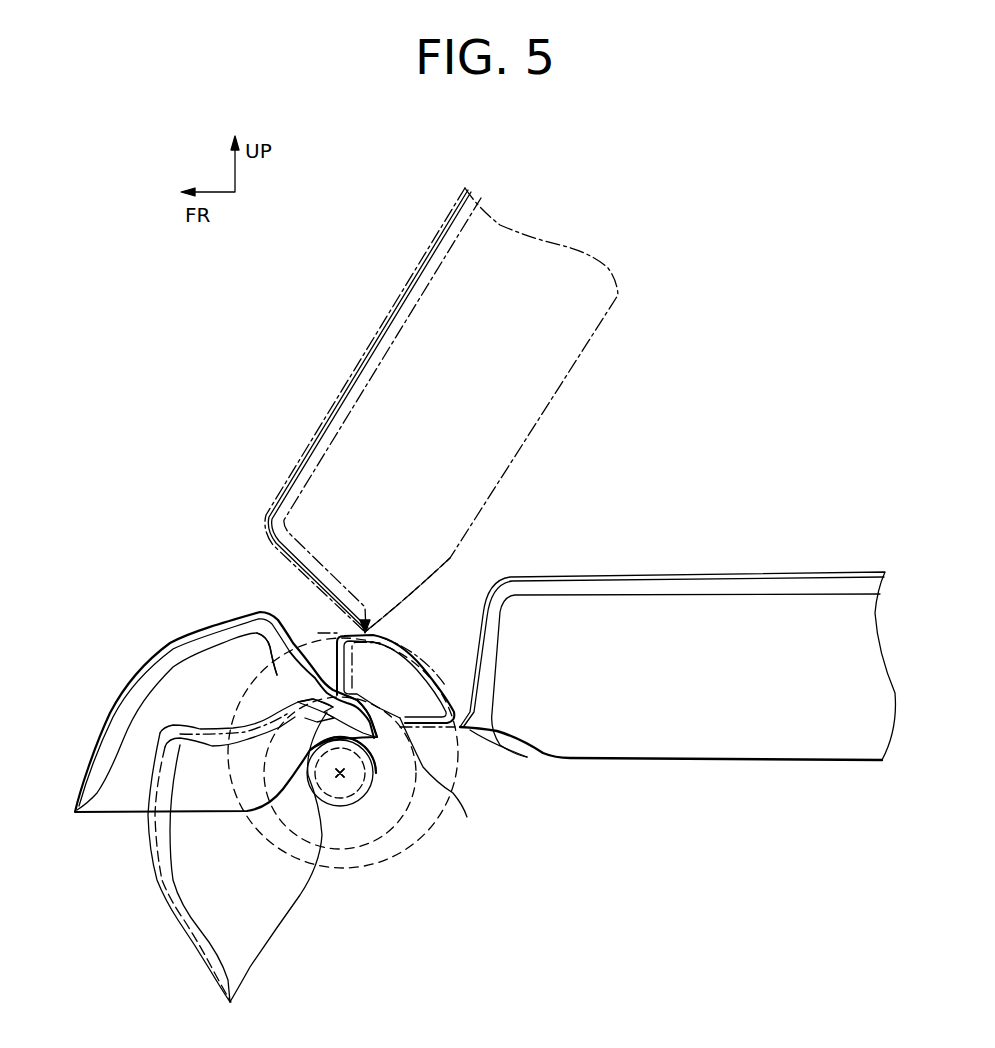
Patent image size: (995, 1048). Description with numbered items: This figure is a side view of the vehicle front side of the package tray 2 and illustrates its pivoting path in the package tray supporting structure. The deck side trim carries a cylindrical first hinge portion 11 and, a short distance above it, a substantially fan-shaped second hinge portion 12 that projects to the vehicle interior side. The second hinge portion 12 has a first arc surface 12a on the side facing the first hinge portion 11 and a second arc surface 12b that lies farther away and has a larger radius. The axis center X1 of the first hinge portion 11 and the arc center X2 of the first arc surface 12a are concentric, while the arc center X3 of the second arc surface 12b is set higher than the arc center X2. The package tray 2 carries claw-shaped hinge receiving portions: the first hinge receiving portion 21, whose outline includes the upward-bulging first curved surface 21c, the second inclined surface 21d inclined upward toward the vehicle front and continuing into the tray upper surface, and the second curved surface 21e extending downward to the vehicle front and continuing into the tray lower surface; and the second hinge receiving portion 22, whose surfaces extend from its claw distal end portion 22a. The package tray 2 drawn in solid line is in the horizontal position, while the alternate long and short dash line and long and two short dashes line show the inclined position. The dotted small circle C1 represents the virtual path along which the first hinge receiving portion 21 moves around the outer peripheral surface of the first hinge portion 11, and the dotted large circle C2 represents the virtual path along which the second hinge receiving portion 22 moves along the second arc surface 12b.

The package tray 2 is at (409, 281).
The second hinge receiving portion 22 is at (443, 490).
The claw distal end portion 22a is at (520, 760).
The second hinge portion 12 is at (400, 668).
The first arc surface 12a is at (450, 784).
The second arc surface 12b is at (413, 673).
The first hinge portion 11 is at (363, 802).
The first hinge receiving portion 21 is at (277, 693).
The first curved surface 21c is at (352, 694).
The second inclined surface 21d is at (300, 652).
The second curved surface 21e is at (341, 750).
The axis center X1 is at (340, 773).
The arc center X2 is at (380, 915).
The arc center X3 is at (376, 773).
The small circle C1 is at (452, 765).
The large circle C2 is at (448, 762).